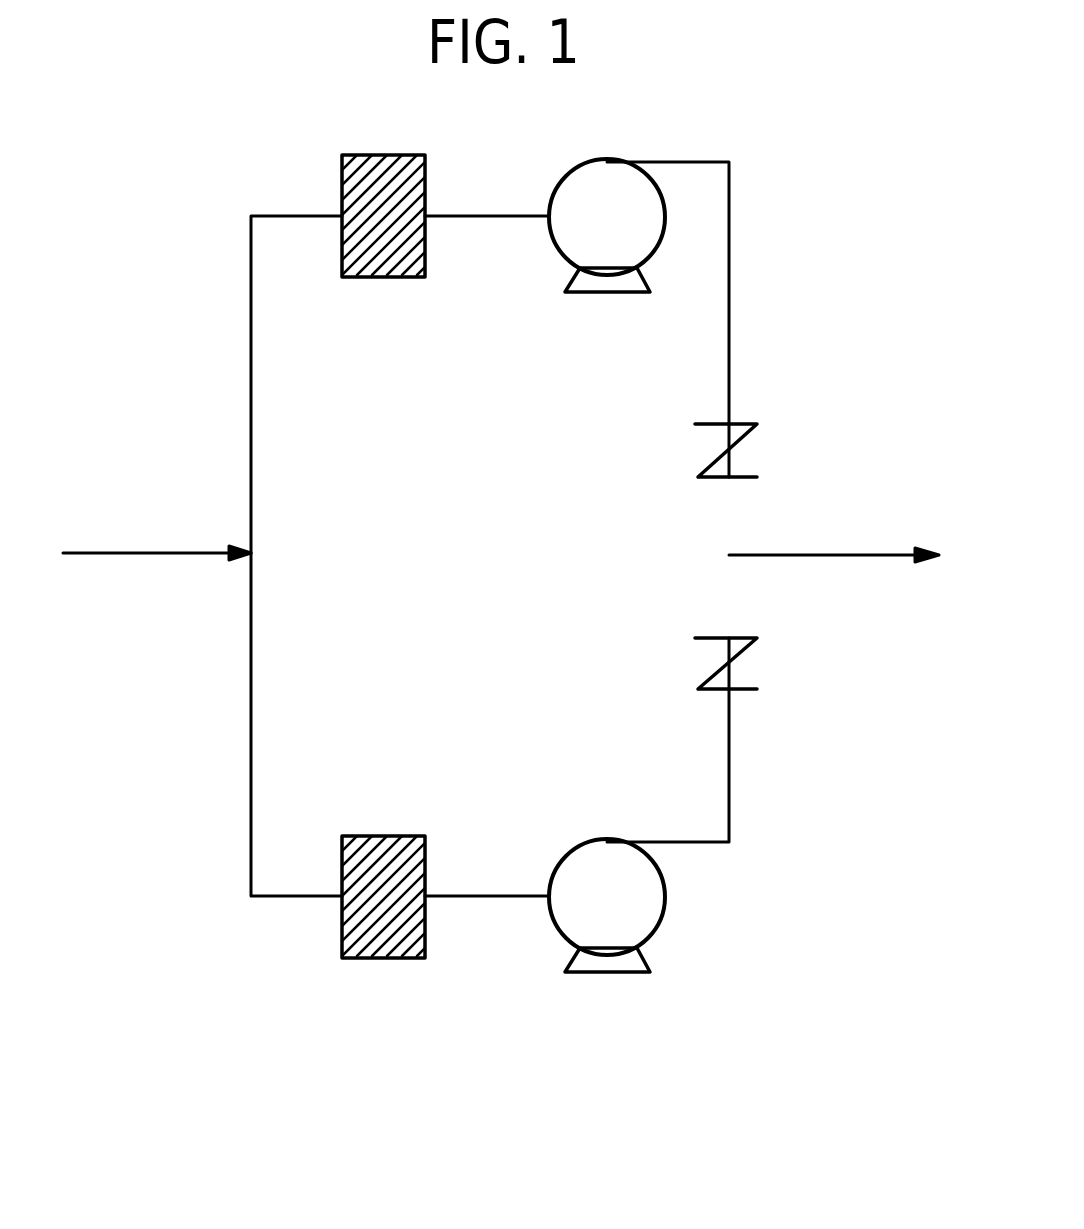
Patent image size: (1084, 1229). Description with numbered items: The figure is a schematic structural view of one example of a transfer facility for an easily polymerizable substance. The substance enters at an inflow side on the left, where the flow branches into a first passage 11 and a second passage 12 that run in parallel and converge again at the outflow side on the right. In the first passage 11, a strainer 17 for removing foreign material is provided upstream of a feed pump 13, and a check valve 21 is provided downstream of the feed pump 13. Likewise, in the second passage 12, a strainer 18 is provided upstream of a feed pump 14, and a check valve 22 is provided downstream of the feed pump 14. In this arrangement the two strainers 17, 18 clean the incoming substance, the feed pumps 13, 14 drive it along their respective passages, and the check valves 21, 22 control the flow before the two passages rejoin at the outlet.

The first passage 11 is at (250, 374).
The second passage 12 is at (250, 772).
The feed pump 13 is at (634, 293).
The feed pump 14 is at (627, 972).
The strainer 17 is at (405, 280).
The strainer 18 is at (405, 960).
The check valve 21 is at (745, 438).
The check valve 22 is at (745, 652).